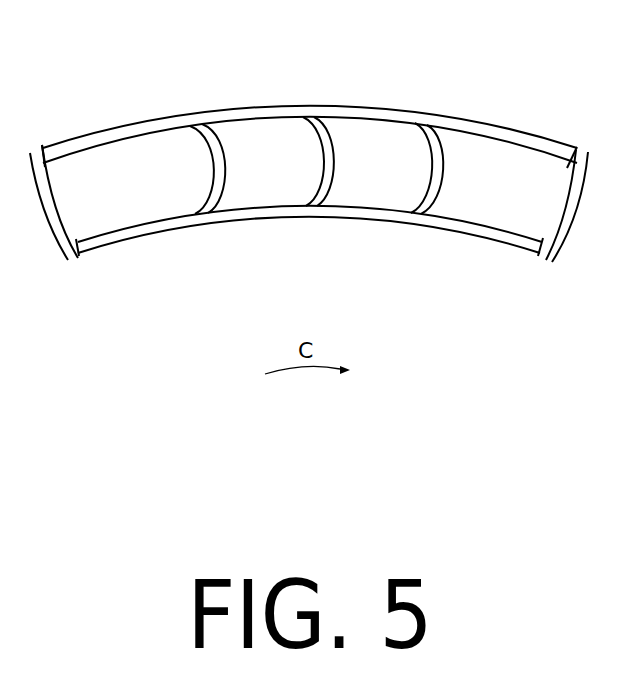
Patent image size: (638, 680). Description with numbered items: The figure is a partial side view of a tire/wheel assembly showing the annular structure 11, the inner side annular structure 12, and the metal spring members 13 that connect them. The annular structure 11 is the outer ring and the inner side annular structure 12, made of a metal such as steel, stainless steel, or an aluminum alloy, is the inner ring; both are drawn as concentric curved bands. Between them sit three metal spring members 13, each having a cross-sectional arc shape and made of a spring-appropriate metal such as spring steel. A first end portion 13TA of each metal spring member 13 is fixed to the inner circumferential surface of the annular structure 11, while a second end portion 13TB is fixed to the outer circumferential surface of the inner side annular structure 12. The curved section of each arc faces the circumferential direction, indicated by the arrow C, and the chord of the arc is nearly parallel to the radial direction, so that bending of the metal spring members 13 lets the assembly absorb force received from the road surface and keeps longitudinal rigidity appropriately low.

The annular structure 11 is at (505, 133).
The inner side annular structure 12 is at (337, 210).
The metal spring member 13 is at (209, 144).
The first end portion 13TA is at (278, 74).
The second end portion 13TB is at (281, 258).